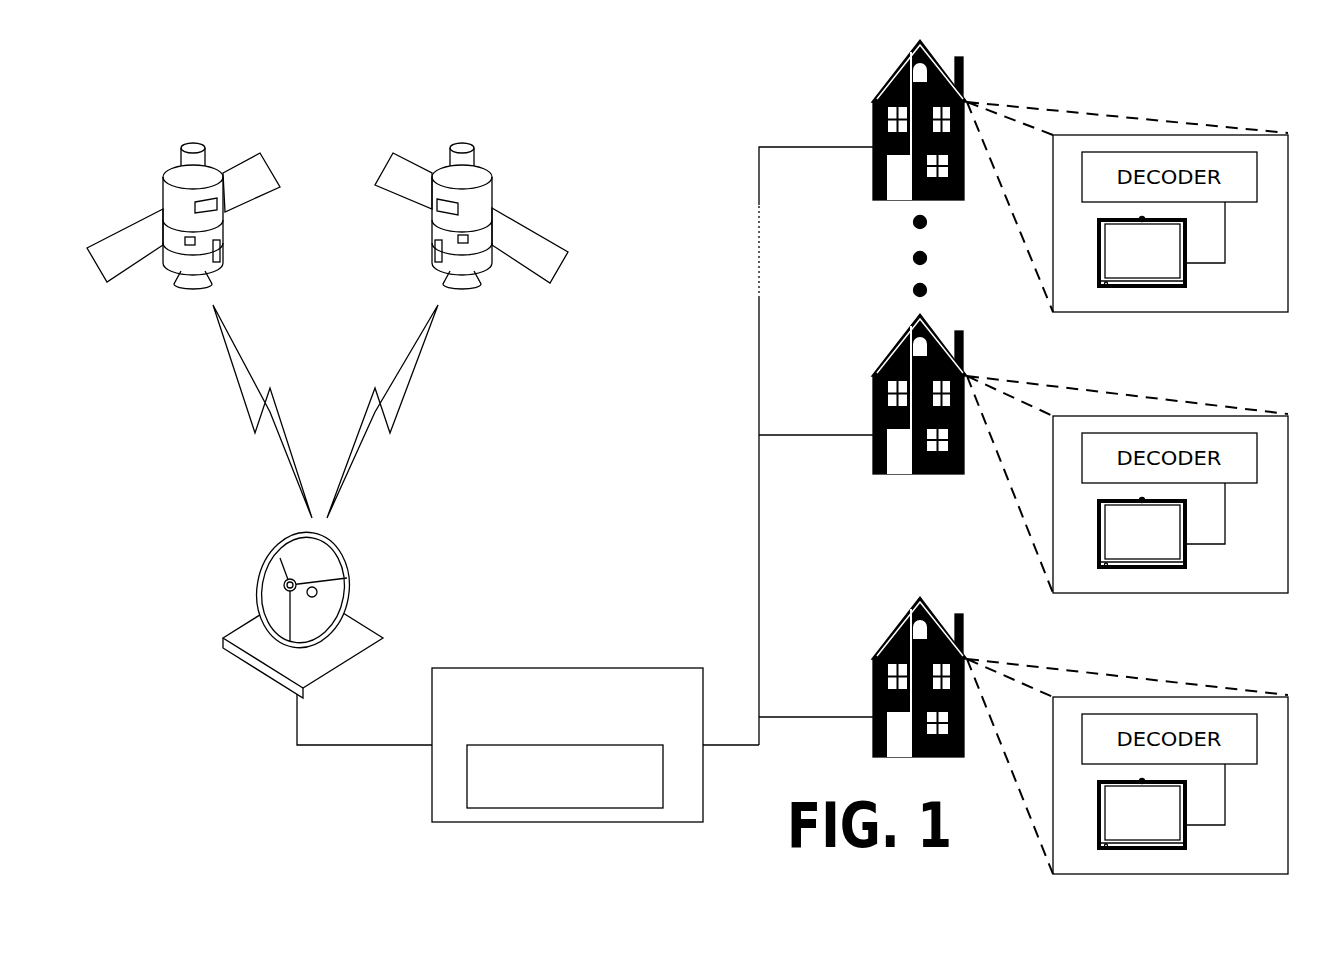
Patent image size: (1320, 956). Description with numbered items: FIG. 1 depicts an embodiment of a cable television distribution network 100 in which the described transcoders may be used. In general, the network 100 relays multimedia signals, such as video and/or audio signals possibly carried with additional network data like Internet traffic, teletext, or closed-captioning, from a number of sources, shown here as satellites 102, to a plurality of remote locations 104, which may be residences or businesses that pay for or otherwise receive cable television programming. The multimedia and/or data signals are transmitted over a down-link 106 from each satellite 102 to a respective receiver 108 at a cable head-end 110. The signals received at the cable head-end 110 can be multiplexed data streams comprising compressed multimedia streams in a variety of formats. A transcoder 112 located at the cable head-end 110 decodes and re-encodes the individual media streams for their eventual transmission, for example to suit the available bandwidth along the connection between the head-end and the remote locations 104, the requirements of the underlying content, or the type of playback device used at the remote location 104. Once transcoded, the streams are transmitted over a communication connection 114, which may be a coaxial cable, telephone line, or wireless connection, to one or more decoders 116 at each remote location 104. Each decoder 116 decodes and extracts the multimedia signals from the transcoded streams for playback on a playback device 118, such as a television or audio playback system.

The cable television distribution network 100 is at (207, 90).
The satellite 102 is at (152, 212).
The remote location 104 is at (892, 73).
The down-link 106 is at (228, 350).
The receiver 108 is at (248, 620).
The cable head-end 110 is at (632, 667).
The transcoder 112 is at (628, 745).
The communication connection 114 is at (759, 393).
The decoder 116 is at (1227, 203).
The playback device 118 is at (1182, 290).